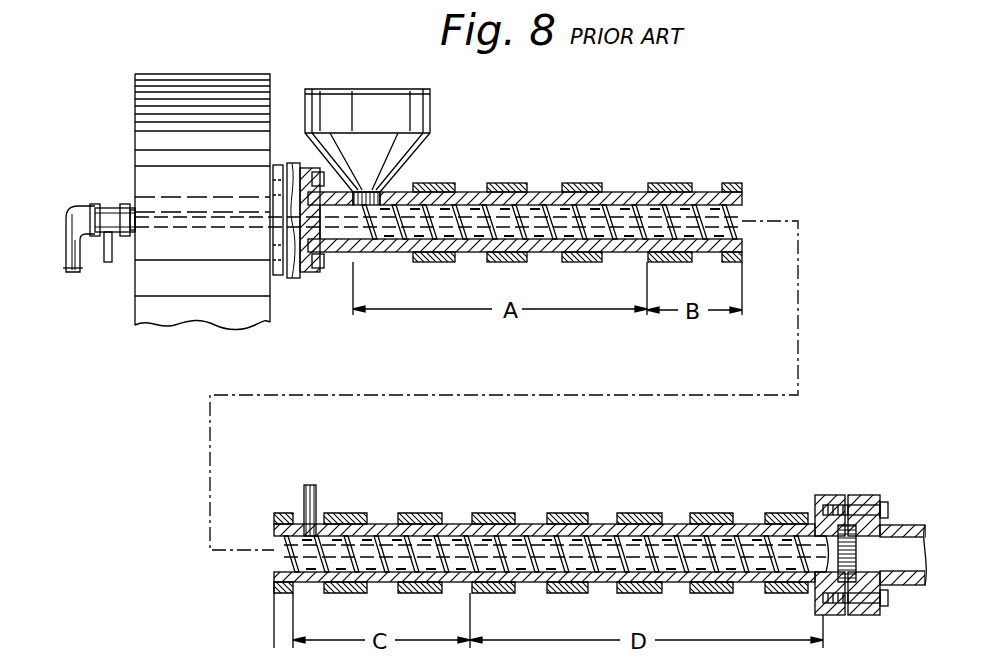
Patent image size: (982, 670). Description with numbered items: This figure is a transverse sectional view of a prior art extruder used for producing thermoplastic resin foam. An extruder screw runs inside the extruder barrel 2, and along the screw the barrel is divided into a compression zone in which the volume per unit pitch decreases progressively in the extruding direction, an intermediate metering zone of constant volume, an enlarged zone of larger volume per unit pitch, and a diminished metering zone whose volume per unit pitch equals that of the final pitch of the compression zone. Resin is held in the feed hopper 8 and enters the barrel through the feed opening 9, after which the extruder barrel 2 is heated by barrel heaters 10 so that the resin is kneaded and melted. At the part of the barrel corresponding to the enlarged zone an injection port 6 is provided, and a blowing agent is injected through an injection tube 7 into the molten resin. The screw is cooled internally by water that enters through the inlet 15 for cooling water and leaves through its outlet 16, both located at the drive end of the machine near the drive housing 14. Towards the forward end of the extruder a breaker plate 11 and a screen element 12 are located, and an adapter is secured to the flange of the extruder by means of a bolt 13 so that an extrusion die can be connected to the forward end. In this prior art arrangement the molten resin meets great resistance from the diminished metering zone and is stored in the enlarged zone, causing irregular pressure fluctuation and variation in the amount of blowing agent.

The extruder barrel 2 is at (504, 192).
The injection port 6 is at (318, 528).
The injection tube 7 is at (316, 490).
The feed hopper 8 is at (428, 97).
The feed opening 9 is at (362, 193).
The barrel heaters 10 is at (667, 183).
The breaker plate 11 is at (898, 530).
The breaker plate 12 is at (858, 552).
The bolt 13 is at (860, 505).
The drive housing 14 is at (255, 316).
The inlet for cooling water 15 is at (70, 272).
The outlet 16 is at (108, 262).